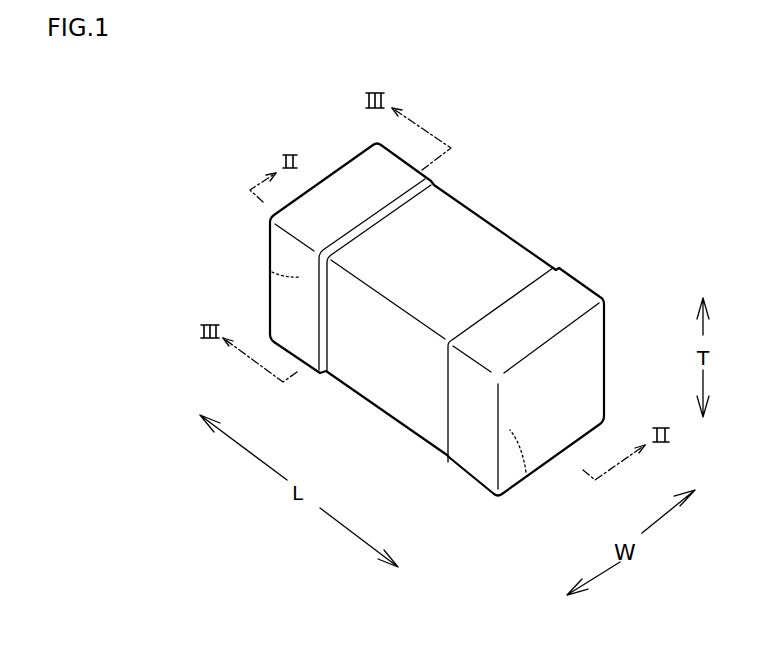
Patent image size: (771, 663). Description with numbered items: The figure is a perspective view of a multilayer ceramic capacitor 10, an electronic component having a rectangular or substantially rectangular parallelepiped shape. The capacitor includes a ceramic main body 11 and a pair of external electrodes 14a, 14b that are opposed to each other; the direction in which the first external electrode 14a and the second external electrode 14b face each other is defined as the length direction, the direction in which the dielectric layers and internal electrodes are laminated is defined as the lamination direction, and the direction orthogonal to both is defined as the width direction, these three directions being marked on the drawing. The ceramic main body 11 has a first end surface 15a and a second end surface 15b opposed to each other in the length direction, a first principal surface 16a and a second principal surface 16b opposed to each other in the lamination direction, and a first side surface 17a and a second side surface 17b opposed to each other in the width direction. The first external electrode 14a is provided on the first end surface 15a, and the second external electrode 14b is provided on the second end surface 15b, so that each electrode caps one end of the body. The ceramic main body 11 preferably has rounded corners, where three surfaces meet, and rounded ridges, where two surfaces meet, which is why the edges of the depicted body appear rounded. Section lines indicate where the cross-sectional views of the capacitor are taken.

The multilayer ceramic capacitor 10 is at (595, 140).
The ceramic main body 11 is at (475, 232).
The first external electrode 14a is at (357, 168).
The second external electrode 14b is at (577, 287).
The first end surface 15a is at (270, 272).
The second end surface 15b is at (526, 472).
The first principal surface 16a is at (513, 257).
The second principal surface 16b is at (428, 423).
The first side surface 17a is at (390, 383).
The second side surface 17b is at (550, 266).